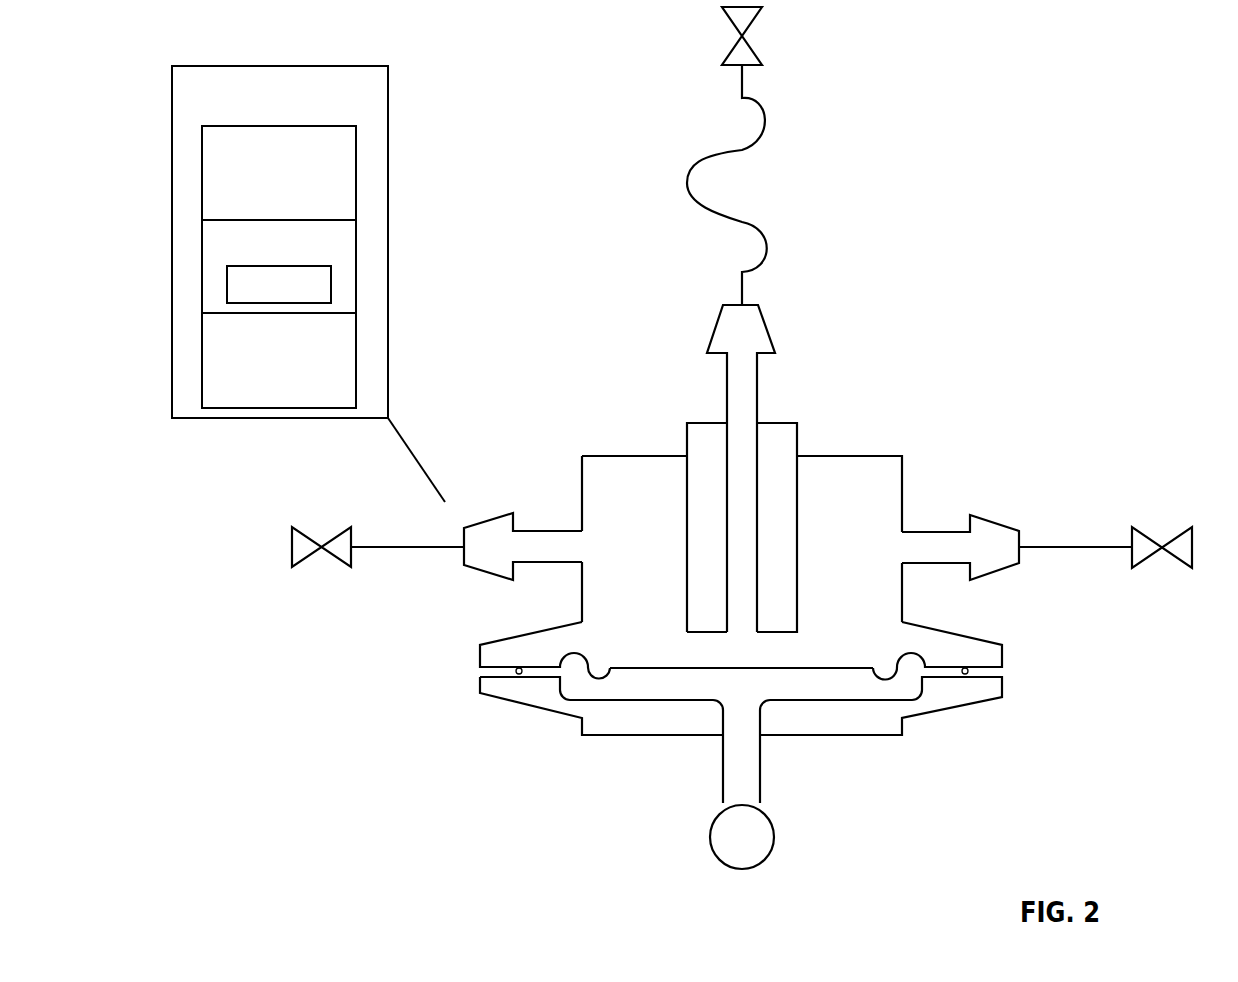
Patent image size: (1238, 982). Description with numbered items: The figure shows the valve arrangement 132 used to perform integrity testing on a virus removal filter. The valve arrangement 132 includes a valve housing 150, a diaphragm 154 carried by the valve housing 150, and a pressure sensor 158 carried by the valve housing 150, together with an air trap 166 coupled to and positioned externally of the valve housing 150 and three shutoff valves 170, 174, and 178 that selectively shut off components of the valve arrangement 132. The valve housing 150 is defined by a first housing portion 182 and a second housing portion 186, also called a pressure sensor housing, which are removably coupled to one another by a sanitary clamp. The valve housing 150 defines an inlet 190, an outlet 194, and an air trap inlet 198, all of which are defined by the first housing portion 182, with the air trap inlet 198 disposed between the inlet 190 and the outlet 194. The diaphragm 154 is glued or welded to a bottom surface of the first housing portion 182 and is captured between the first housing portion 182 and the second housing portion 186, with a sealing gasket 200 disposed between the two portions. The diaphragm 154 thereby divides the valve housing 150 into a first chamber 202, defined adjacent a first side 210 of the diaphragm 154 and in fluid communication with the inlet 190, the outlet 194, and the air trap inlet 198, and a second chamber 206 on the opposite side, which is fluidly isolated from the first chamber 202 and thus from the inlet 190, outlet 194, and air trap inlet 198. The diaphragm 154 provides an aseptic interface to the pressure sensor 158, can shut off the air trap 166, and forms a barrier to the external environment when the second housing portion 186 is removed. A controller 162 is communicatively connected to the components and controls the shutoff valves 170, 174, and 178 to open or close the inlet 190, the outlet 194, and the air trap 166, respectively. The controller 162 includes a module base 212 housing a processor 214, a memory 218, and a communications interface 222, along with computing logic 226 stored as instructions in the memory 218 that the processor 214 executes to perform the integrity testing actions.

The valve arrangement 132 is at (551, 325).
The valve housing 150 is at (888, 456).
The diaphragm 154 is at (670, 669).
The pressure sensor 158 is at (775, 835).
The controller 162 is at (201, 107).
The air trap 166 is at (768, 247).
The first shutoff valve 170 is at (322, 548).
The second shutoff valve 174 is at (1160, 547).
The third shutoff valve 178 is at (745, 37).
The first housing portion 182 is at (650, 456).
The second housing portion 186 is at (603, 736).
The inlet 190 is at (463, 557).
The outlet 194 is at (1022, 537).
The air trap inlet 198 is at (752, 630).
The sealing gasket 200 is at (519, 674).
The first chamber 202 is at (875, 579).
The second chamber 206 is at (843, 694).
The first side 210 is at (623, 665).
The module base 212 is at (238, 66).
The processor 214 is at (201, 174).
The memory 218 is at (201, 242).
The communications interface 222 is at (201, 360).
The computing logic 226 is at (227, 287).